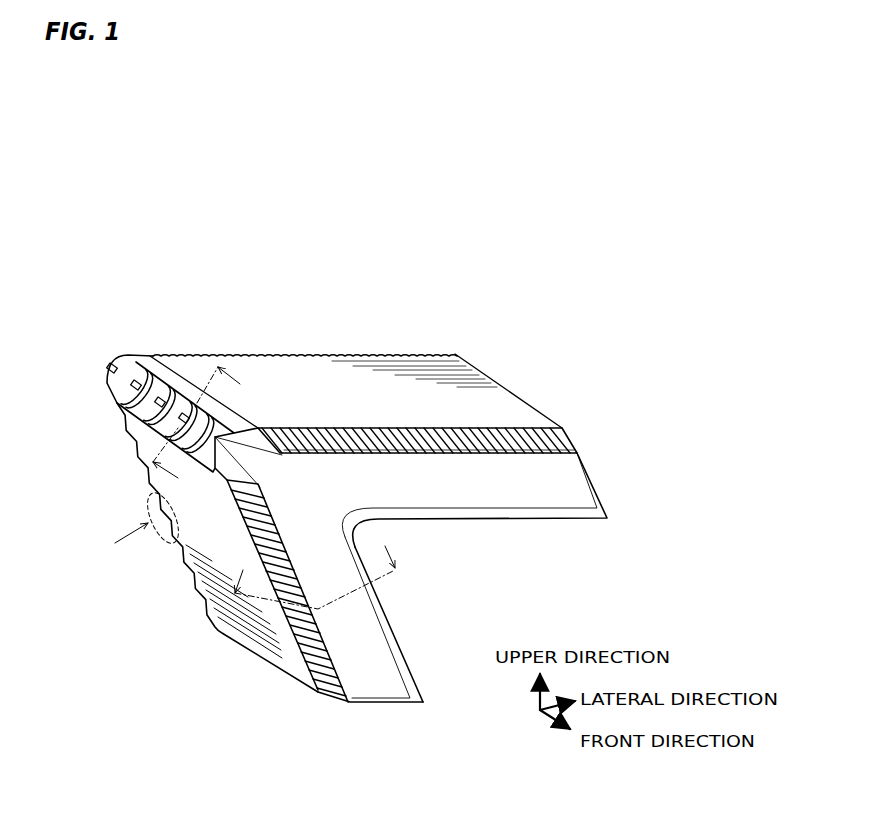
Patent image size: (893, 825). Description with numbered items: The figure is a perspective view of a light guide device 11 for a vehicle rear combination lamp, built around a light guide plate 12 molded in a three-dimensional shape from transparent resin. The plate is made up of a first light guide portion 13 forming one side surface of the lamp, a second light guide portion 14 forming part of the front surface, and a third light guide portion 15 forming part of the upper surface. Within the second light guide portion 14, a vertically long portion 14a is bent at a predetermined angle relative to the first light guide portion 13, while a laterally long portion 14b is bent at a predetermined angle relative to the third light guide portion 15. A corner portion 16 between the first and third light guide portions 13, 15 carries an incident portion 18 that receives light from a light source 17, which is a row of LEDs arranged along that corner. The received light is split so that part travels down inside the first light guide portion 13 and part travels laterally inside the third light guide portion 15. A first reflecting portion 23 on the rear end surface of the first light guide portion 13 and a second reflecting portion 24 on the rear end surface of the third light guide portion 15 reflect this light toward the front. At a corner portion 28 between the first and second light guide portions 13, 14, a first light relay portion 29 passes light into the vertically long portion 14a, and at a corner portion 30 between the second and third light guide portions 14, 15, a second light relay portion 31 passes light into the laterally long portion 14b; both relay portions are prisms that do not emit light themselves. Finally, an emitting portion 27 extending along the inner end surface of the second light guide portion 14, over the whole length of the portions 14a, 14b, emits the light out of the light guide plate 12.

The light guide device 11 is at (222, 316).
The light guide plate 12 is at (512, 388).
The first light guide portion 13 is at (150, 484).
The second light guide portion 14 is at (502, 553).
The vertically long portion 14a is at (363, 622).
The laterally long portion 14b is at (475, 492).
The third light guide portion 15 is at (290, 368).
The corner portion 16 is at (112, 398).
The light source 17 is at (110, 358).
The incident portion 18 is at (140, 367).
The first reflecting portion 23 is at (193, 588).
The second reflecting portion 24 is at (328, 353).
The emitting portion 27 is at (405, 657).
The corner portion 28 is at (337, 697).
The first light relay portion 29 is at (283, 537).
The corner portion 30 is at (574, 438).
The second light relay portion 31 is at (345, 428).